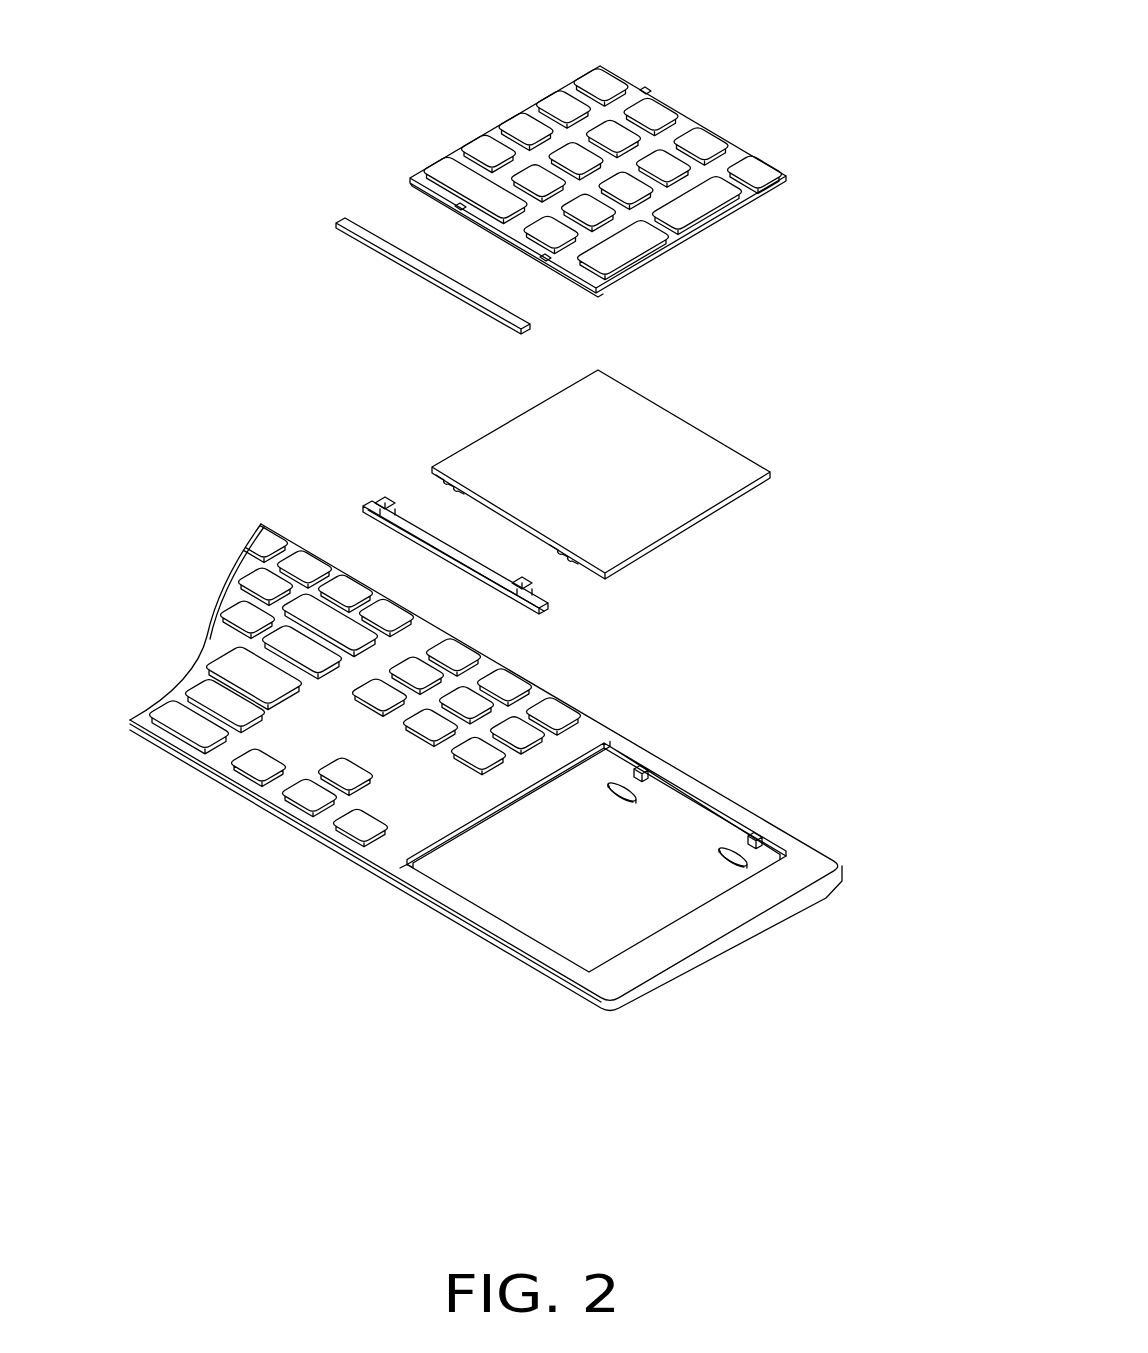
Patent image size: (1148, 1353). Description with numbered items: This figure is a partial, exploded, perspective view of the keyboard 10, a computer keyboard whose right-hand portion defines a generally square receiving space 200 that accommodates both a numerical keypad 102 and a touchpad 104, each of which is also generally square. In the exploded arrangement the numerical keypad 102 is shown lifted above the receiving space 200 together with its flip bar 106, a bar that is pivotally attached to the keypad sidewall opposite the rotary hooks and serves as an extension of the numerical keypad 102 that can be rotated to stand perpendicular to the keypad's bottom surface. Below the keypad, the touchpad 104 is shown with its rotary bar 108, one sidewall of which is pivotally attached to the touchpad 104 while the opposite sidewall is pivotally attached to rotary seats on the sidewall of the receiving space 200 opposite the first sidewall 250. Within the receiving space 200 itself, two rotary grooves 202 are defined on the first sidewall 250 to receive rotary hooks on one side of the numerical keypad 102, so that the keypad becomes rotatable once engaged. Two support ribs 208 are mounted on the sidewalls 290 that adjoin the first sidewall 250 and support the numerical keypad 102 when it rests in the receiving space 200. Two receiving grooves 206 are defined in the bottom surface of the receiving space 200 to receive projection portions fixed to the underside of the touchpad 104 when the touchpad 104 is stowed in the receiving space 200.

The keyboard 10 is at (343, 62).
The numerical keypad 102 is at (707, 135).
The touchpad 104 is at (660, 428).
The flip bar 106 is at (390, 250).
The rotary bar 108 is at (371, 502).
The receiving space 200 is at (655, 892).
The rotary grooves 202 is at (753, 840).
The receiving grooves 206 is at (723, 853).
The support ribs 208 is at (570, 790).
The first sidewall 250 is at (688, 797).
The sidewalls 290 is at (410, 862).